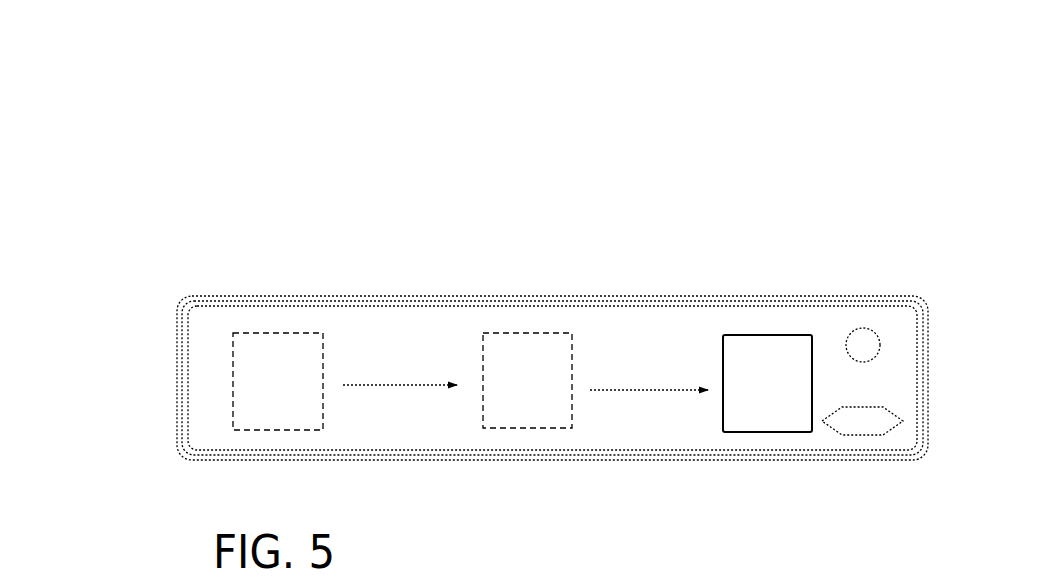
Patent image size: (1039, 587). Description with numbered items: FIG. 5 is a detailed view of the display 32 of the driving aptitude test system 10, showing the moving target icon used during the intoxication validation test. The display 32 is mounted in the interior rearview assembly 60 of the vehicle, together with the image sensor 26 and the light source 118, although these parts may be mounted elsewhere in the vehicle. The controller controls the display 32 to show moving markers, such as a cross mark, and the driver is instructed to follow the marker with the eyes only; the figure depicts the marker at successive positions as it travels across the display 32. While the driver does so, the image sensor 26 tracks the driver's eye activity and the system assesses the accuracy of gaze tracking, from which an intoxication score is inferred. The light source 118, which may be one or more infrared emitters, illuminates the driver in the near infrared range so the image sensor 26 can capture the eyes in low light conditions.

The electronic device 10 is at (872, 103).
The display 32 is at (197, 350).
The interior rearview assembly 60 is at (901, 296).
The image sensor 26 is at (872, 348).
The light source 118 is at (873, 428).